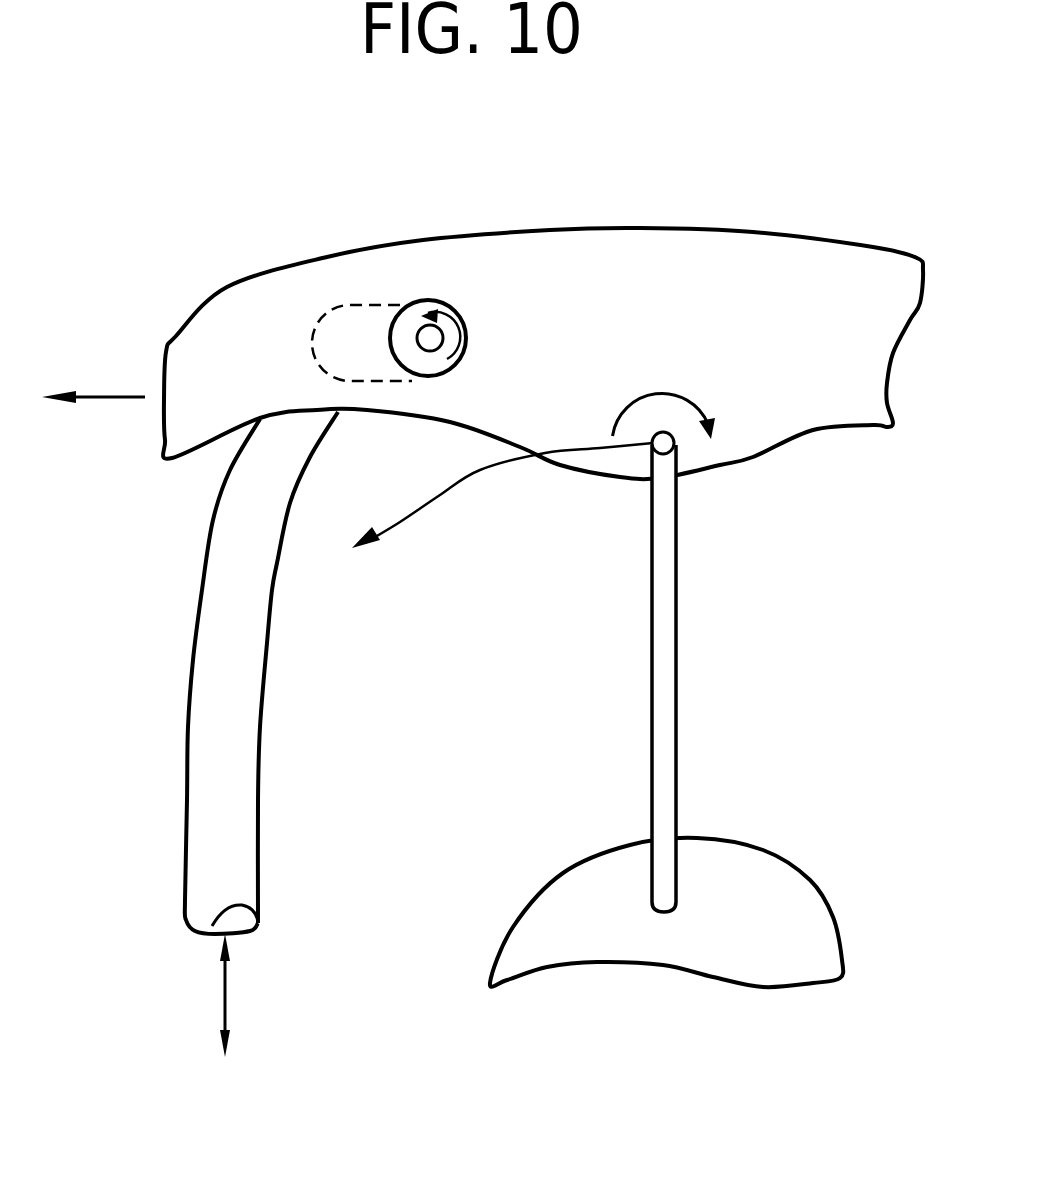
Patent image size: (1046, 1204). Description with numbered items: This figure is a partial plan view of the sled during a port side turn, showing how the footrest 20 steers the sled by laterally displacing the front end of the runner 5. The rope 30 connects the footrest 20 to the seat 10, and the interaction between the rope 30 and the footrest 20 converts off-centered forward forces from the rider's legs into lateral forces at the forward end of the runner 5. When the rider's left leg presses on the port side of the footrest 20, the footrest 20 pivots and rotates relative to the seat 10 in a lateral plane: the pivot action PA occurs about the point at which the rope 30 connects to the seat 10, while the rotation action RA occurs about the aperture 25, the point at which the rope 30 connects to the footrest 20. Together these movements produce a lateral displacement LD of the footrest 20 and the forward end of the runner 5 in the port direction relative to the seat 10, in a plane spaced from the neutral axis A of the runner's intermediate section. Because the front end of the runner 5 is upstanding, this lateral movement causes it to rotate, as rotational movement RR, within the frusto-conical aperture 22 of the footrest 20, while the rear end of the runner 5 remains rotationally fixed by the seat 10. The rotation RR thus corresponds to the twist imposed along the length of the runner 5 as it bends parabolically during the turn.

The runner 5 is at (187, 716).
The seat 10 is at (810, 880).
The footrest 20 is at (753, 232).
The aperture 22 is at (368, 304).
The aperture 25 is at (673, 438).
The rope 30 is at (675, 635).
The rotational movement RR is at (467, 337).
The rotation action RA is at (687, 412).
The pivot action PA is at (502, 495).
The lateral displacement LD is at (93, 373).
The neutral axis A is at (243, 995).